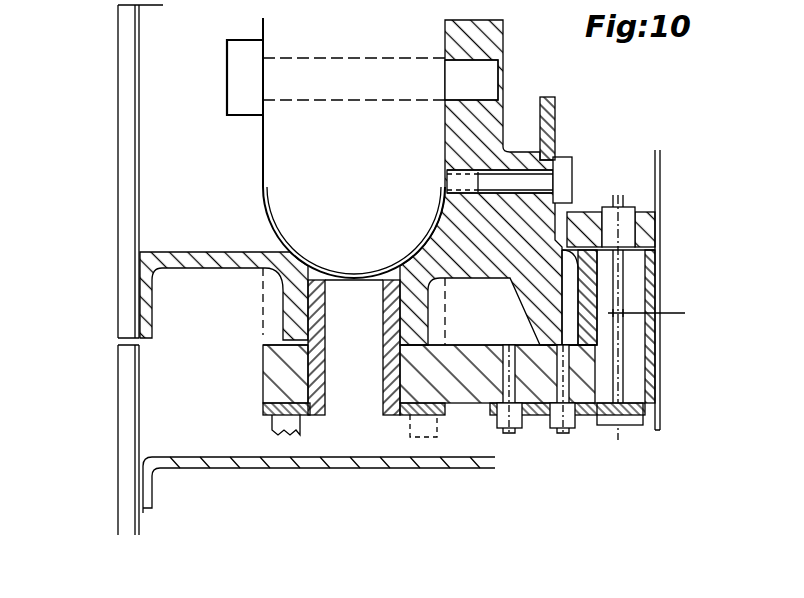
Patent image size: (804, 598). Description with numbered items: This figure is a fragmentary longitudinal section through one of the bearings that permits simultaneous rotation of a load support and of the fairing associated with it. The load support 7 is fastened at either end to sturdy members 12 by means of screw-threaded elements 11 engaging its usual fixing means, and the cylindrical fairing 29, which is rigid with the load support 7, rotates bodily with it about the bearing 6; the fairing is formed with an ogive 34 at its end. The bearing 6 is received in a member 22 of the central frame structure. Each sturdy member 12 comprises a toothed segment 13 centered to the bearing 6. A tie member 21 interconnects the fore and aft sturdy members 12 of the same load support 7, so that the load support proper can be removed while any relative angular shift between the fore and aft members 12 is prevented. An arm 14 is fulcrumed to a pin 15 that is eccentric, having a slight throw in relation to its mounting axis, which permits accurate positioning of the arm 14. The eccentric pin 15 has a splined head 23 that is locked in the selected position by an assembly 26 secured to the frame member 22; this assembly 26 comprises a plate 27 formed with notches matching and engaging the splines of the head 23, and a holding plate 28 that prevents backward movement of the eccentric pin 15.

The cylindrical fairing 29 is at (137, 35).
The screw-threaded elements 11 is at (227, 70).
The load support 7 is at (288, 198).
The sturdy members 12 is at (515, 215).
The tie member 21 is at (553, 112).
The toothed segment 13 is at (573, 275).
The arm 14 is at (657, 283).
The pin 15 is at (623, 368).
The holding plate 28 is at (618, 435).
The splined head 23 is at (660, 430).
The bearing 6 is at (315, 415).
The frame member 22 is at (440, 375).
The locking assembly 26 is at (522, 430).
The notched plate 27 is at (575, 430).
The ogive 34 is at (138, 465).